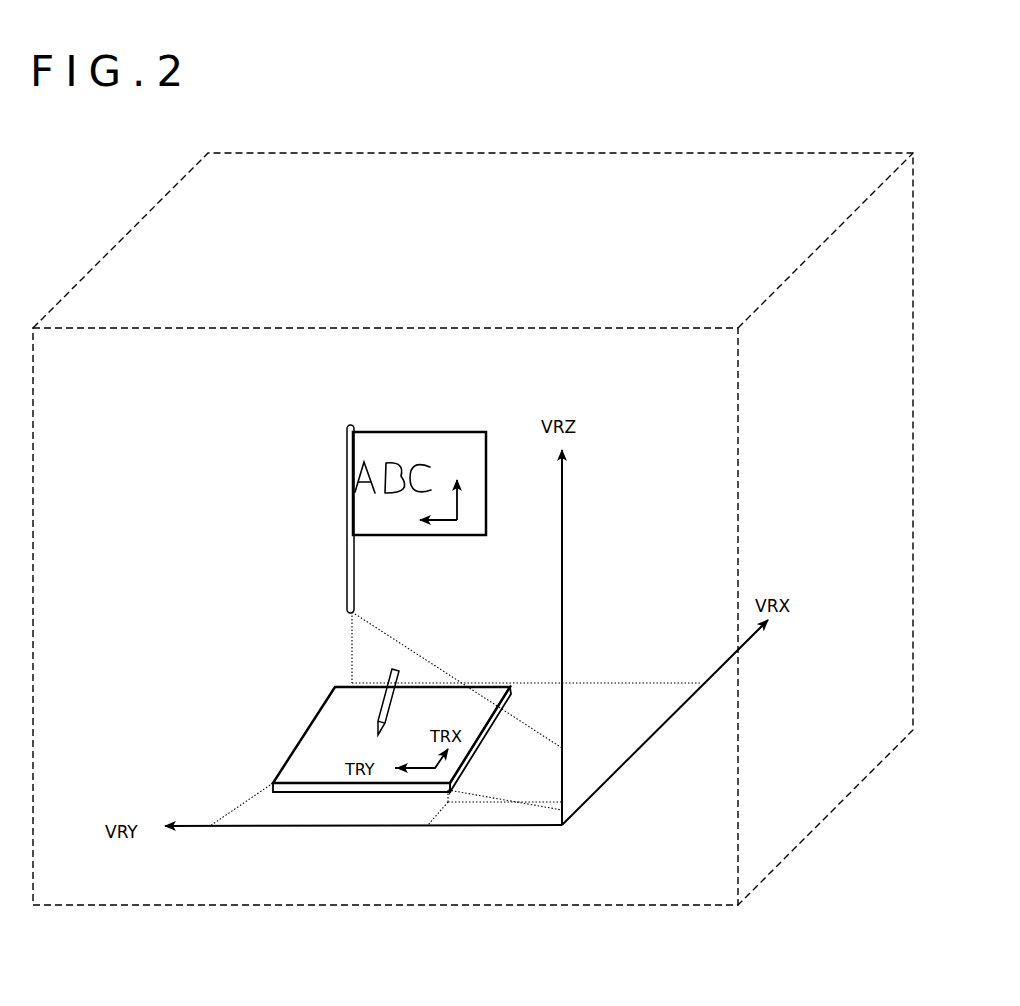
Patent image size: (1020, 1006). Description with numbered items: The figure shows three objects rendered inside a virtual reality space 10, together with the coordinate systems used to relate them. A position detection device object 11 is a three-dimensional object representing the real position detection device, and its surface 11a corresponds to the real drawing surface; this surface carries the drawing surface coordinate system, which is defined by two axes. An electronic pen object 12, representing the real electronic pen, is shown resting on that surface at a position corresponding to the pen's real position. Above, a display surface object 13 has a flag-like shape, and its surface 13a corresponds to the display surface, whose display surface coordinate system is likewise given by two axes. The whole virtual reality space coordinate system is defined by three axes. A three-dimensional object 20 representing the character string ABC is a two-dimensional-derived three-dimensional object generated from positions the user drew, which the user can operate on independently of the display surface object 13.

The virtual reality space 10 is at (683, 905).
The position detection device object 11 is at (387, 716).
The surface of the position detection device object 11a is at (500, 685).
The electronic pen object 12 is at (393, 706).
The display surface object 13 is at (383, 501).
The surface of the display surface object 13a is at (473, 432).
The 3D object 20 is at (350, 444).